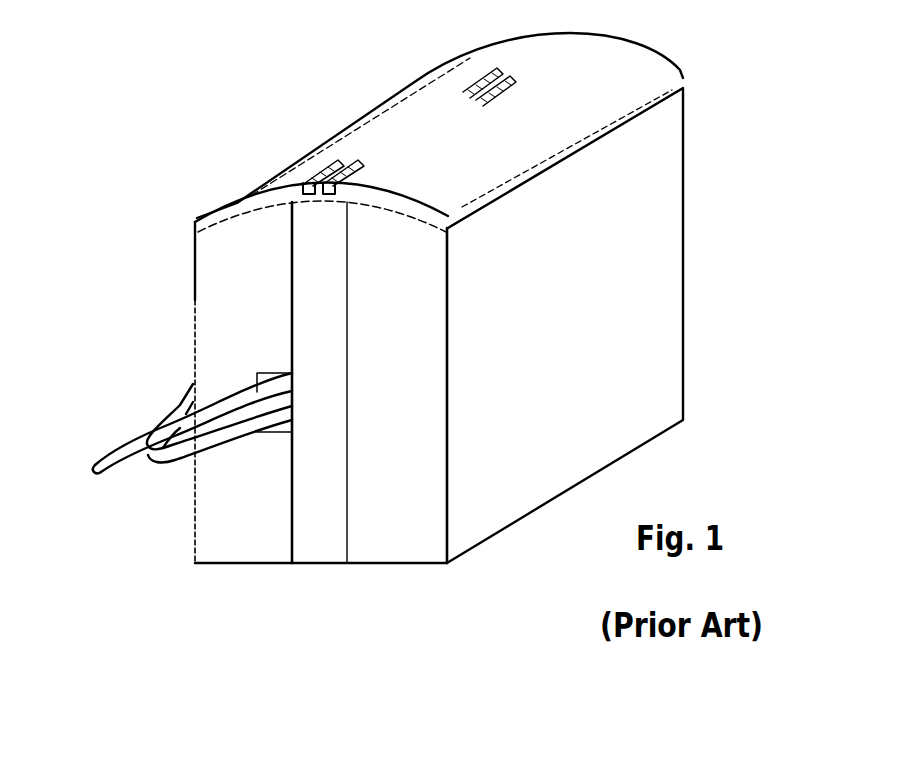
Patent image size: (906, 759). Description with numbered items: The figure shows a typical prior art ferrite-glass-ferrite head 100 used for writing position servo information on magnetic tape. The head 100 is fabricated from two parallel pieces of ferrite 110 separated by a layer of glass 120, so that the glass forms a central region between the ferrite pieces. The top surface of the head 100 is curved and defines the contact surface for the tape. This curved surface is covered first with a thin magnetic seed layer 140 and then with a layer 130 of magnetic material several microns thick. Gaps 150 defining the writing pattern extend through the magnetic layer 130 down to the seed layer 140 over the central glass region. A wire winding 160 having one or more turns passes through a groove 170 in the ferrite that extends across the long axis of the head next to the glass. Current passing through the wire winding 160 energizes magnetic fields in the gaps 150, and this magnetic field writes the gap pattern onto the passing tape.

The head 100 is at (750, 38).
The ferrite 110 is at (252, 542).
The layer of glass 120 is at (331, 542).
The layer of magnetic material 130 is at (517, 139).
The magnetic seed layer 140 is at (415, 214).
The gaps 150 is at (508, 88).
The wire winding 160 is at (108, 452).
The groove 170 is at (272, 427).